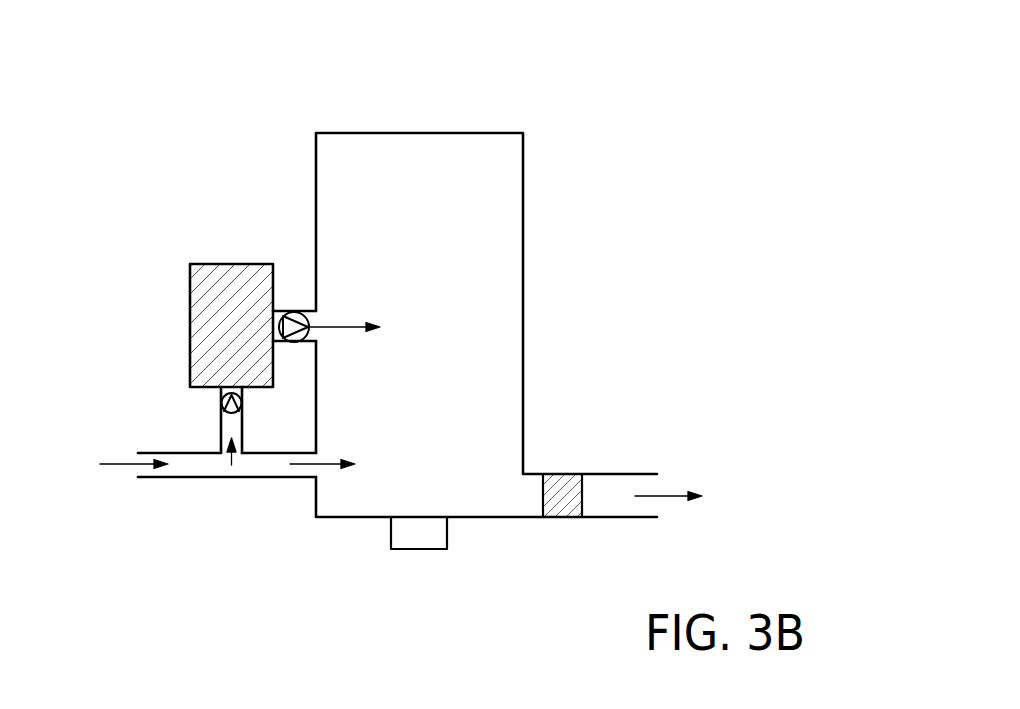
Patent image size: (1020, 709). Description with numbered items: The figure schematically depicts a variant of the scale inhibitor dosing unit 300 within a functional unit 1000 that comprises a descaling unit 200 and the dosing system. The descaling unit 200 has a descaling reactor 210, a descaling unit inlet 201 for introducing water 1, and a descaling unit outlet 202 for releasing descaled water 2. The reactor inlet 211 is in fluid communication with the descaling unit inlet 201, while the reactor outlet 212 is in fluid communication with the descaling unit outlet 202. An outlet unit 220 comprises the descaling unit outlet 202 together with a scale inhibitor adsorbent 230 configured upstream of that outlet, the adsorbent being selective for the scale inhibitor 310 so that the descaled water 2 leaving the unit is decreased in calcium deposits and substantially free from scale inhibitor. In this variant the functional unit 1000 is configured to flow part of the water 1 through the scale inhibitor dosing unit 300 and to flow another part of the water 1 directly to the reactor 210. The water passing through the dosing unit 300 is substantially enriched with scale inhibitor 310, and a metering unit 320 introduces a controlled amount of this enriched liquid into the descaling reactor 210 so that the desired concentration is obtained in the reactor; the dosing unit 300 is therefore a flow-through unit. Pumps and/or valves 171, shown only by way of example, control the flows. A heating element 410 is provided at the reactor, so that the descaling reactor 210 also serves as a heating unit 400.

The functional unit 1000 is at (706, 145).
The descaling unit 200 is at (458, 122).
The descaling reactor 210 is at (535, 115).
The outlet unit 220 is at (593, 378).
The scale inhibitor adsorbent 230 is at (570, 483).
The descaling unit outlet 202 is at (653, 484).
The descaled water 2 is at (662, 498).
The reactor outlet 212 is at (531, 505).
The heating element 410 is at (416, 540).
The heating unit 400 is at (431, 553).
The descaling unit inlet 201 is at (203, 468).
The reactor inlet 211 is at (139, 622).
The water 1 is at (118, 466).
The pumps and/or valves 171 is at (221, 403).
The scale inhibitor dosing unit 300 is at (175, 317).
The scale inhibitor 310 is at (243, 270).
The metering unit 320 is at (178, 242).